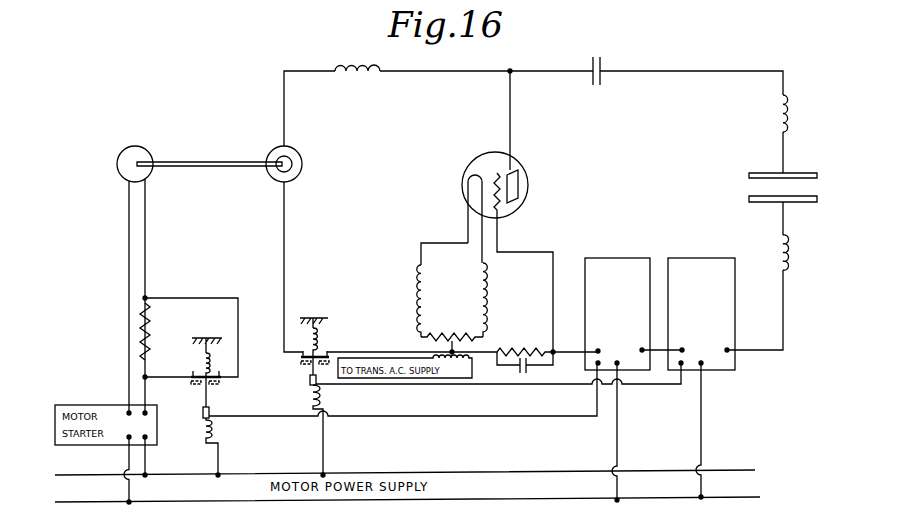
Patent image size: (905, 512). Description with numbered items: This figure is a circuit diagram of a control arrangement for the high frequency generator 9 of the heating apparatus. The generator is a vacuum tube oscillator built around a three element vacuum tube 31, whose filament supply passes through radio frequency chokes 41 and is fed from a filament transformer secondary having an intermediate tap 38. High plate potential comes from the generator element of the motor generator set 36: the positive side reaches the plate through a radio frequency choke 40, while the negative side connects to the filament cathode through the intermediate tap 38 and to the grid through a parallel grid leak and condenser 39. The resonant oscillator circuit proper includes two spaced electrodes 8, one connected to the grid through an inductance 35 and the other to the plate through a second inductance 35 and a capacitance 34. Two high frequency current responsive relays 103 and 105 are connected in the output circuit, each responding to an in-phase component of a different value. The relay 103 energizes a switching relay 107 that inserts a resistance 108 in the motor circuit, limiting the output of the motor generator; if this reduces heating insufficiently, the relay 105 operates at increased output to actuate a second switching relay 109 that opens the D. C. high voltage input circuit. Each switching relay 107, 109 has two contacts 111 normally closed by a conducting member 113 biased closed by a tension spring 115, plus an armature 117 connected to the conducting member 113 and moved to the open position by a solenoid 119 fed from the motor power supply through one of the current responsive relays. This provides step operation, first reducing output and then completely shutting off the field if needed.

The spaced electrodes 8 is at (749, 198).
The high frequency generator 9 is at (645, 177).
The three element vacuum tube 31 is at (522, 167).
The capacitance 34 is at (603, 74).
The inductance 35 is at (778, 262).
The motor generator set 36 is at (208, 158).
The intermediate tap 38 is at (456, 350).
The parallel grid leak and condenser 39 is at (549, 348).
The radio frequency choke 40 is at (356, 78).
The radio frequency chokes 41 is at (478, 288).
The high frequency current responsive relay 103 is at (612, 258).
The high frequency current responsive relay 105 is at (702, 258).
The switching relay 107 is at (196, 323).
The resistance 108 is at (145, 333).
The second switching relay 109 is at (298, 383).
The contacts 111 is at (328, 350).
The conducting member 113 is at (300, 358).
The tension spring 115 is at (316, 336).
The armature 117 is at (307, 380).
The solenoid 119 is at (307, 408).